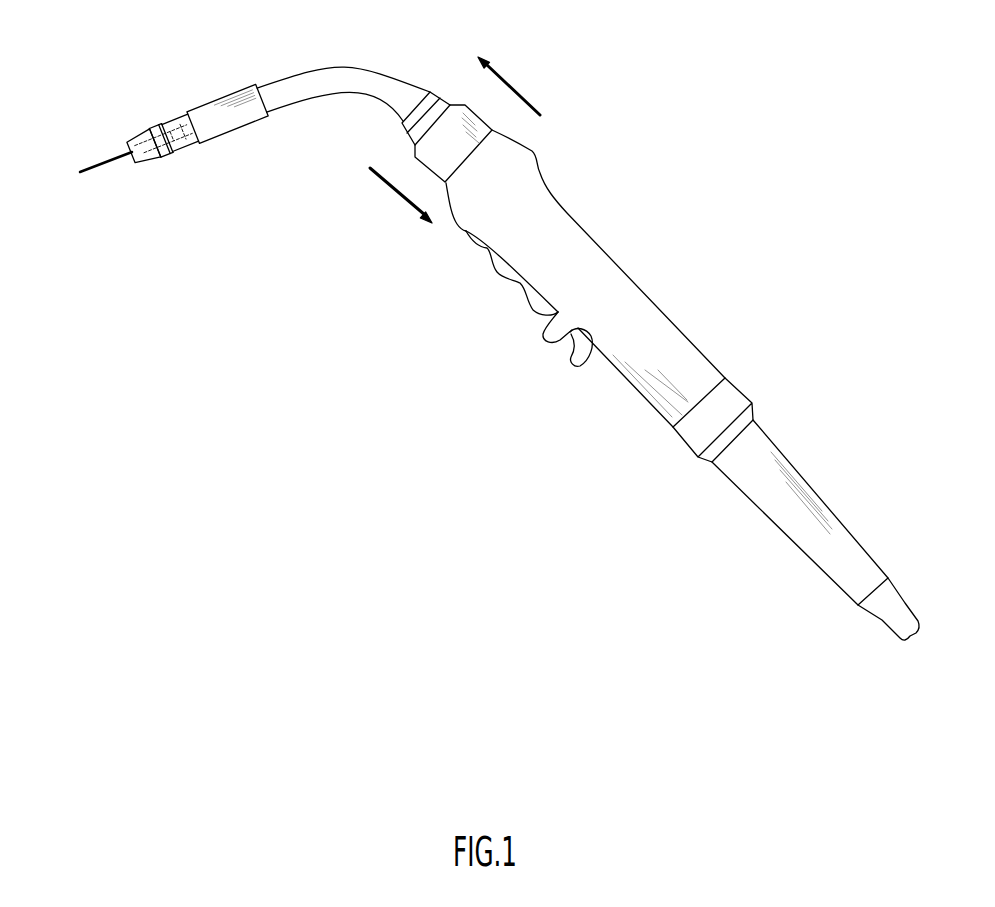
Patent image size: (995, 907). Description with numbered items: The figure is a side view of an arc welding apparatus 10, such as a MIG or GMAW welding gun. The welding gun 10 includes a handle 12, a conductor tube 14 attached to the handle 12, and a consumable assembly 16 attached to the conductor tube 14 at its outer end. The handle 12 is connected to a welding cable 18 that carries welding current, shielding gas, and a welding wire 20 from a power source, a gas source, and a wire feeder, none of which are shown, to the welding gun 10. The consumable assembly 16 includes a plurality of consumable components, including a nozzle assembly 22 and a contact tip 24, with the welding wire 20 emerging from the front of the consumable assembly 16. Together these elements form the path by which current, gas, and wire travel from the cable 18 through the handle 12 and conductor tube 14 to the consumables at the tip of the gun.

The arc welding apparatus 10 is at (693, 168).
The handle 12 is at (648, 303).
The conductor tube 14 is at (347, 72).
The consumable assembly 16 is at (186, 112).
The welding cable 18 is at (818, 495).
The welding wire 20 is at (102, 166).
The nozzle assembly 22 is at (232, 91).
The contact tip 24 is at (188, 137).